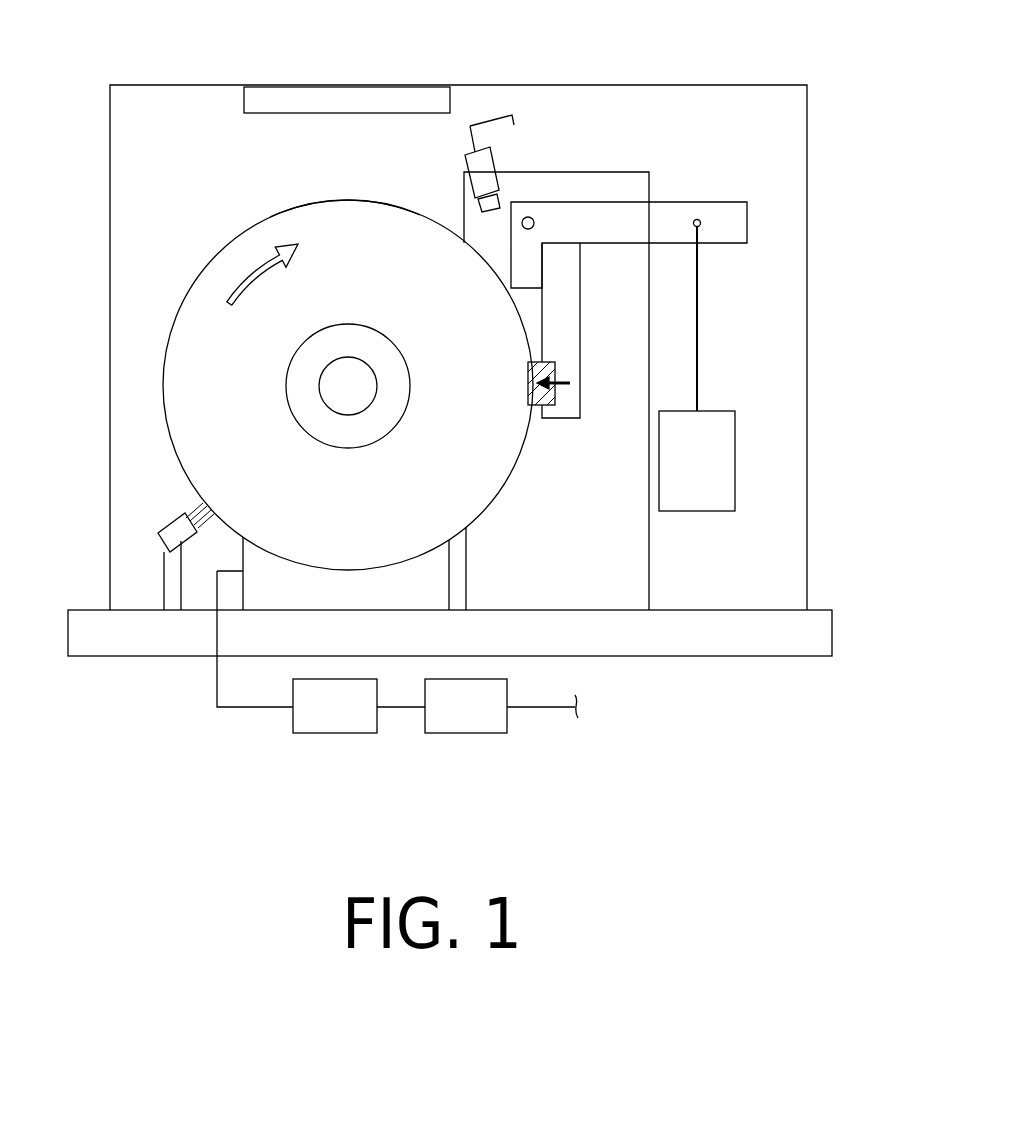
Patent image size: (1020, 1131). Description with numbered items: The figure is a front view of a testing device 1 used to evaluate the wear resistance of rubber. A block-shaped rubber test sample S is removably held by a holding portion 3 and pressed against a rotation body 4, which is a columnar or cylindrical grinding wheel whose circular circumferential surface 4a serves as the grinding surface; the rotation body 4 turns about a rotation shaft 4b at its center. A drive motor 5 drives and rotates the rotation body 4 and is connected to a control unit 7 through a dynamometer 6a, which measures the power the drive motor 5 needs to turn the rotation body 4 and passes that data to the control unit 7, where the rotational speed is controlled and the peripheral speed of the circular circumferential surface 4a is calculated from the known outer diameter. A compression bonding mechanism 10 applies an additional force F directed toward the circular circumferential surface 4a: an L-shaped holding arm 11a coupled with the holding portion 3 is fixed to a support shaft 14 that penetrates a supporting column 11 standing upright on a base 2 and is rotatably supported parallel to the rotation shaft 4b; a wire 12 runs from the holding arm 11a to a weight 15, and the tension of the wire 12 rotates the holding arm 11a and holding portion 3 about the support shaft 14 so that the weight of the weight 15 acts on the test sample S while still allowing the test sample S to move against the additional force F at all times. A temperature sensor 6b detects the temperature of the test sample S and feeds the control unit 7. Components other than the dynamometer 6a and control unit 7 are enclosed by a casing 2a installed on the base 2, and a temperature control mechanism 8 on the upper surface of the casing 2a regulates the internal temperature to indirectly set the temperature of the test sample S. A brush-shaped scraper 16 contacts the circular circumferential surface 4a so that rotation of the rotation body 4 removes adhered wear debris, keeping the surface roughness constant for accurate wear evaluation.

The testing device 1 is at (95, 172).
The base 2 is at (92, 620).
The casing 2a is at (648, 84).
The holding portion 3 is at (568, 420).
The rotation body 4 is at (227, 247).
The circular circumferential surface 4a is at (310, 200).
The rotation shaft 4b is at (345, 398).
The drive motor 5 is at (355, 598).
The dynamometer 6a is at (334, 718).
The temperature sensor 6b is at (466, 166).
The control unit 7 is at (462, 718).
The temperature control mechanism 8 is at (343, 114).
The compression bonding mechanism 10 is at (683, 178).
The supporting column 11 is at (632, 530).
The holding arm 11a is at (610, 215).
The wire 12 is at (697, 330).
The support shaft 14 is at (527, 216).
The weight 15 is at (712, 420).
The scraper 16 is at (175, 530).
The test sample S is at (530, 370).
The additional force F is at (555, 374).